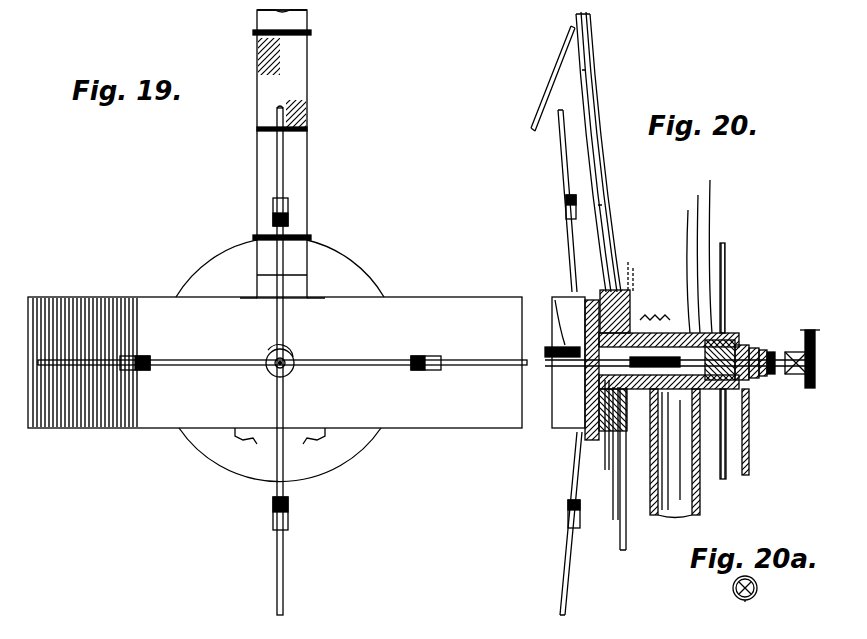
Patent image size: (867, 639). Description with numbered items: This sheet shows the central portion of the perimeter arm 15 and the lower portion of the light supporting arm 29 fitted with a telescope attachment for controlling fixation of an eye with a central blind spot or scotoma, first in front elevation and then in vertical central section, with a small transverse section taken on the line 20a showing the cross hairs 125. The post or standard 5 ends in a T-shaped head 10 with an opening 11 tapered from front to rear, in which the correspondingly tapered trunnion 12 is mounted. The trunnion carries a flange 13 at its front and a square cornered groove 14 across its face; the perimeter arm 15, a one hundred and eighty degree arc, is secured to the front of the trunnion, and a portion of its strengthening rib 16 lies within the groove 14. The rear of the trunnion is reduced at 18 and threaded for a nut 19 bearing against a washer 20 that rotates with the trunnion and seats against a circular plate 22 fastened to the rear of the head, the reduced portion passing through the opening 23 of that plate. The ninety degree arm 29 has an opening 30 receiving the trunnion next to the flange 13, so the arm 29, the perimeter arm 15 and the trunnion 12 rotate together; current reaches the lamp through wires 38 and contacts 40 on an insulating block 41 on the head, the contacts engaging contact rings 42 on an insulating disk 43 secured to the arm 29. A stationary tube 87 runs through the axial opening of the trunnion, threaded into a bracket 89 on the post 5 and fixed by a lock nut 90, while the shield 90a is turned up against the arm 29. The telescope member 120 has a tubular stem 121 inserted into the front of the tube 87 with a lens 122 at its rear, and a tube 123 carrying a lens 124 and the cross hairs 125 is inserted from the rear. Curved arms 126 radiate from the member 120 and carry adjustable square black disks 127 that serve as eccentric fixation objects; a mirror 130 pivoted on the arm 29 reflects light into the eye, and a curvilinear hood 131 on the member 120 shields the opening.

In FIG. 20, the post or standard 5 is at (700, 500).
In FIG. 20, the T-shaped head 10 is at (690, 260).
In FIG. 20, the opening 11 is at (709, 259).
In FIG. 20, the trunnion 12 is at (712, 195).
In FIG. 20, the flange 13 is at (600, 430).
In FIG. 20, the square cornered groove 14 is at (592, 420).
In FIG. 19, the perimeter arm 15 is at (360, 430).
In FIG. 20, the perimeter arm 15 is at (580, 428).
In FIG. 20, the rib or thickened strengthening portion 16 is at (585, 405).
In FIG. 20, the reduced portion 18 is at (752, 348).
In FIG. 20, the nut 19 is at (762, 350).
In FIG. 20, the washer 20 is at (738, 345).
In FIG. 20, the line 20a— 20a is at (795, 372).
In FIG. 19, the circular plate 22 is at (345, 284).
In FIG. 20, the circular plate 22 is at (725, 252).
In FIG. 20, the opening 23 is at (715, 340).
In FIG. 19, the light supporting arm 29 is at (307, 26).
In FIG. 20, the light supporting arm 29 is at (595, 50).
In FIG. 20, the opening 30 is at (607, 440).
In FIG. 20, the wires 38 is at (622, 290).
In FIG. 20, the contacts 40 is at (636, 300).
In FIG. 20, the insulating block 41 is at (645, 318).
In FIG. 20, the contact rings 42 is at (632, 290).
In FIG. 20, the disk of insulating material 43 is at (613, 470).
In FIG. 20, the stationary tube 87 is at (770, 352).
In FIG. 20, the bracket 89 is at (750, 450).
In FIG. 20, the lock nut 90 is at (760, 358).
In FIG. 19, the shield 90a is at (300, 178).
In FIG. 19, the member 120 is at (290, 372).
In FIG. 20, the member 120 is at (560, 300).
In FIG. 20, the tubular stem 121 is at (555, 362).
In FIG. 20, the lens 122 is at (626, 500).
In FIG. 20, the tube 123 is at (726, 470).
In FIG. 20A, the tube 123 is at (742, 600).
In FIG. 20, the lens 124 is at (815, 355).
In FIG. 20, the cross hairs 125 is at (790, 374).
In FIG. 20A, the cross hairs 125 is at (757, 588).
In FIG. 19, the curved arms 126 is at (277, 170).
In FIG. 20, the curved arms 126 is at (562, 172).
In FIG. 19, the square black disks 127 is at (288, 222).
In FIG. 20, the square black disks 127 is at (566, 210).
In FIG. 20, the mirror 130 is at (553, 70).
In FIG. 19, the hood 131 is at (293, 355).
In FIG. 20, the hood 131 is at (551, 329).